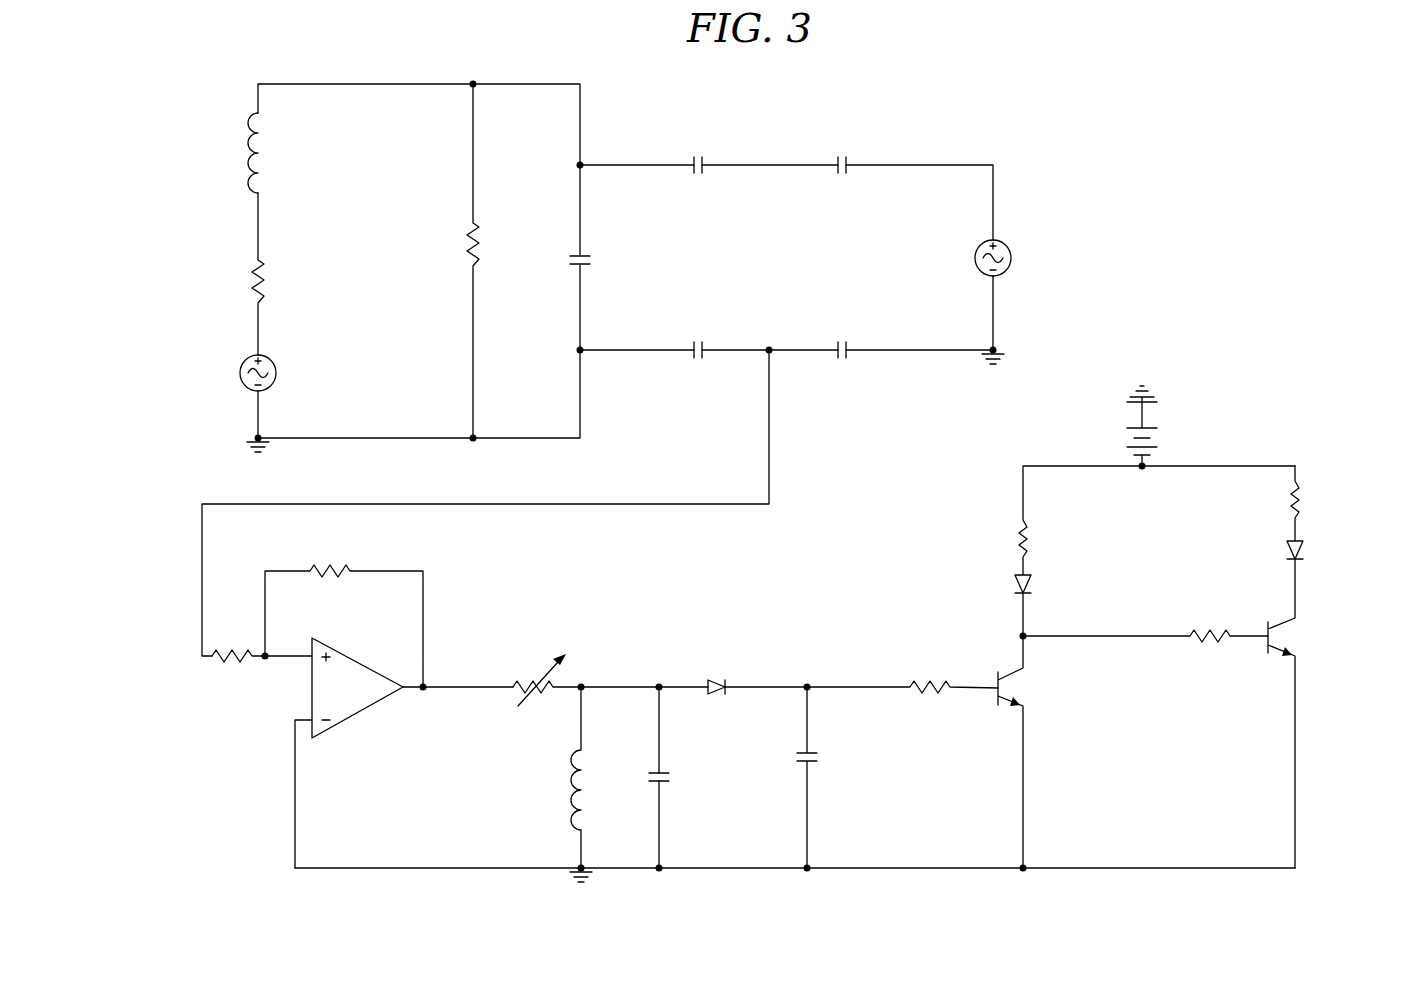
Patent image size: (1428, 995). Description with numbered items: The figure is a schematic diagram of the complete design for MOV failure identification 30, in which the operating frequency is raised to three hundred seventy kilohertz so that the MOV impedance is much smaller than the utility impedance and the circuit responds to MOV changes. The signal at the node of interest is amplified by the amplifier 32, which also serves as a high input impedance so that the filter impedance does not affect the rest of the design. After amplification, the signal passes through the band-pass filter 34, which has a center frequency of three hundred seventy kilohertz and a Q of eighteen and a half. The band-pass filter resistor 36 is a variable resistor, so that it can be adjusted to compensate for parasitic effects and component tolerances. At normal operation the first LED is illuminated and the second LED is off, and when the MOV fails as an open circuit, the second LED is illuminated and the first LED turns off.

The complete design for MOV failure identification 30 is at (1097, 126).
The amplifier 32 is at (431, 616).
The band-pass filter 34 is at (753, 638).
The band-pass filter resistor 36 is at (553, 650).